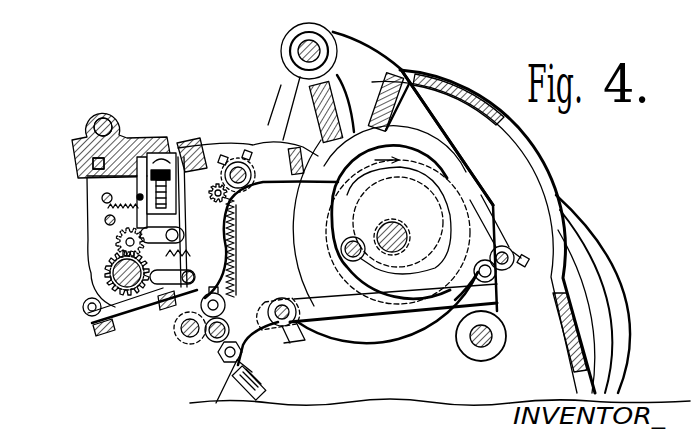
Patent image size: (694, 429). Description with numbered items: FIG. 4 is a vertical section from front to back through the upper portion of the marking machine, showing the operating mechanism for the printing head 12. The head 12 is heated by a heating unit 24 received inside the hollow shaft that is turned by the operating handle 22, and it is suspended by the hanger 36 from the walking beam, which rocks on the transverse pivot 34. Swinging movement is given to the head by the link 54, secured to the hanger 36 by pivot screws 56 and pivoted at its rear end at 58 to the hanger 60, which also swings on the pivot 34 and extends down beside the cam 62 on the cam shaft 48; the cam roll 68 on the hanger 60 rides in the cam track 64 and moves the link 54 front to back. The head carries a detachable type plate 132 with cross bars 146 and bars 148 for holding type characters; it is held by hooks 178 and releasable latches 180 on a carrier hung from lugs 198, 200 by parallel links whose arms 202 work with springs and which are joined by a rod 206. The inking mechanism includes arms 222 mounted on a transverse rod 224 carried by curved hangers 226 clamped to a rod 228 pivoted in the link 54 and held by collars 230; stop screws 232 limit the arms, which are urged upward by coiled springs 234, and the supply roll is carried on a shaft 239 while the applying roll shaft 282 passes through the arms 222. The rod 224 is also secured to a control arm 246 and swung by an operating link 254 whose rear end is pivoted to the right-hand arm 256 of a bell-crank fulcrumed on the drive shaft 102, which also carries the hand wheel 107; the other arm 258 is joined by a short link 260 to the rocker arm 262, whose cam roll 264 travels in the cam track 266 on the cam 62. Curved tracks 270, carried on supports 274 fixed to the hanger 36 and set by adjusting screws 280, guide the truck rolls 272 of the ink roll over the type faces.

The printing head 12 is at (103, 225).
The operating handle 22 is at (93, 197).
The heating unit 24 is at (107, 270).
The transverse pivot 34 is at (306, 46).
The hanger 36 is at (117, 113).
The cam shaft 48 is at (404, 238).
The link 54 is at (280, 150).
The pivot screws 56 is at (95, 120).
The pivot 58 is at (360, 197).
The hanger 60 is at (330, 105).
The cam 62 is at (455, 152).
The cam track 64 is at (473, 173).
The cam roll 68 is at (350, 262).
The drive shaft 102 is at (492, 338).
The hand wheel 107 is at (604, 240).
The type plate 132 is at (83, 305).
The cross bars 146 is at (125, 325).
The bars 148 is at (100, 332).
The hooks 178 is at (205, 332).
The releasable latches 180 is at (90, 323).
The lug 198 is at (108, 207).
The lug 200 is at (167, 297).
The arms 202 is at (172, 176).
The rod 206 is at (234, 248).
The arms 222 is at (222, 340).
The transverse rod 224 is at (352, 333).
The curved hangers 226 is at (268, 292).
The transverse rod 228 is at (237, 162).
The collars 230 is at (247, 151).
The stop screws 232 is at (262, 338).
The coiled springs 234 is at (242, 212).
The shaft 239 is at (230, 362).
The control arm 246 is at (248, 345).
The operating link 254 is at (383, 322).
The right-hand arm 256 is at (500, 293).
The arm 258 is at (453, 297).
The short link 260 is at (492, 243).
The rocker arm 262 is at (438, 127).
The cam roll 264 is at (467, 198).
The cam track 266 is at (406, 235).
The curved tracks 270 is at (236, 283).
The truck rolls 272 is at (210, 318).
The supports 274 is at (160, 152).
The adjusting screws 280 is at (192, 158).
The shaft 282 is at (190, 340).